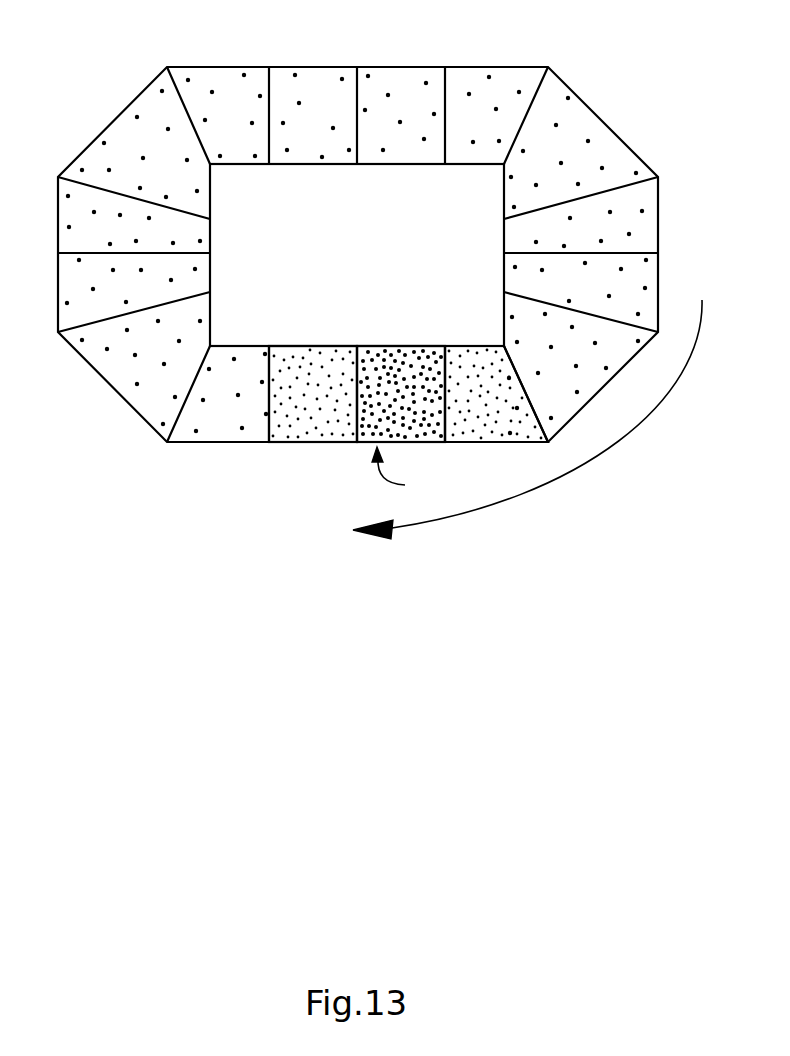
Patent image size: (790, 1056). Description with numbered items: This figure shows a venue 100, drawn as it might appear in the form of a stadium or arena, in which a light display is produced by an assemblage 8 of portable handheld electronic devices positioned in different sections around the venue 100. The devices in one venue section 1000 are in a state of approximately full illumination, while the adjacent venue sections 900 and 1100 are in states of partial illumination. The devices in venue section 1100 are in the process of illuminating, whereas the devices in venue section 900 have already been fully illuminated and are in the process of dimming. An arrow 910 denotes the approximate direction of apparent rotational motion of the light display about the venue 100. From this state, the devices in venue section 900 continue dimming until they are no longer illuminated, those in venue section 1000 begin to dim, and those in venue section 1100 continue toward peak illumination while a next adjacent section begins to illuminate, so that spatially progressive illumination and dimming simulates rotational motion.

The venue 100 is at (570, 85).
The venue section 1100 is at (302, 350).
The venue section 1000 is at (393, 350).
The venue section 900 is at (482, 352).
The assemblage of portable handheld electronic devices 8 is at (396, 470).
The arrow 910 is at (575, 472).